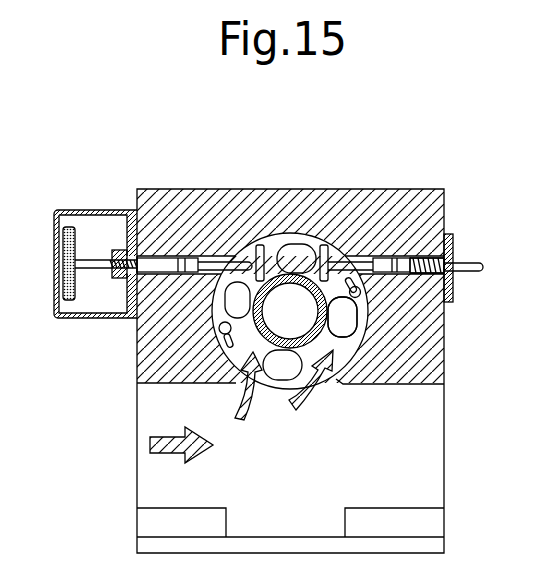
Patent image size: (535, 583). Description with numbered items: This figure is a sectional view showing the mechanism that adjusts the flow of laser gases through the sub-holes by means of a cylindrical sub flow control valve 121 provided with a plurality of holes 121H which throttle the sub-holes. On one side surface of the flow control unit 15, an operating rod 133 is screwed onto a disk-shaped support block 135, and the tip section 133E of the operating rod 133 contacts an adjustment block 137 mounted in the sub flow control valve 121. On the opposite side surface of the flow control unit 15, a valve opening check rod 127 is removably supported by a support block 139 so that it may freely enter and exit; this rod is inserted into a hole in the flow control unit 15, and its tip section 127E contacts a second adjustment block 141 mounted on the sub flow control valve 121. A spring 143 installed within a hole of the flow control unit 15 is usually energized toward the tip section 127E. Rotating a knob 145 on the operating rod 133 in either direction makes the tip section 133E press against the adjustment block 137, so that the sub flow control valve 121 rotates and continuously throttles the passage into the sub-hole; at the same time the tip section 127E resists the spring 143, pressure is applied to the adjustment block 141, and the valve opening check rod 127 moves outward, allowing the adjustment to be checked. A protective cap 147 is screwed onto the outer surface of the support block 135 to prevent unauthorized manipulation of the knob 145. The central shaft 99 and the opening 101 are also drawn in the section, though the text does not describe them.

The flow control unit 15 is at (158, 193).
The tip section of operating rod 133E is at (240, 262).
The adjustment block 137 is at (262, 245).
The adjustment block 141 is at (325, 247).
The tip section of valve opening check rod 127E is at (362, 260).
The protective cap 147 is at (63, 212).
The disk-shaped support block 135 is at (122, 232).
The spring 143 is at (424, 252).
The valve opening check rod 127 is at (466, 265).
The support block 139 is at (455, 292).
The knob 145 is at (58, 302).
The operating rod 133 is at (94, 276).
The sub flow control valve 121 is at (218, 318).
The holes of sub flow control valve 121H is at (358, 318).
The shaft 99 is at (333, 332).
The opening 101 is at (287, 353).